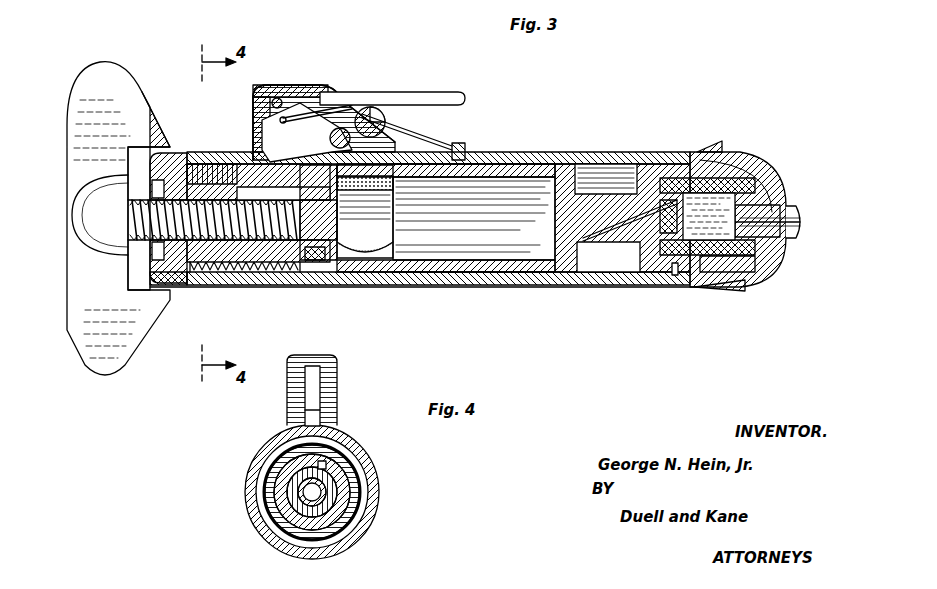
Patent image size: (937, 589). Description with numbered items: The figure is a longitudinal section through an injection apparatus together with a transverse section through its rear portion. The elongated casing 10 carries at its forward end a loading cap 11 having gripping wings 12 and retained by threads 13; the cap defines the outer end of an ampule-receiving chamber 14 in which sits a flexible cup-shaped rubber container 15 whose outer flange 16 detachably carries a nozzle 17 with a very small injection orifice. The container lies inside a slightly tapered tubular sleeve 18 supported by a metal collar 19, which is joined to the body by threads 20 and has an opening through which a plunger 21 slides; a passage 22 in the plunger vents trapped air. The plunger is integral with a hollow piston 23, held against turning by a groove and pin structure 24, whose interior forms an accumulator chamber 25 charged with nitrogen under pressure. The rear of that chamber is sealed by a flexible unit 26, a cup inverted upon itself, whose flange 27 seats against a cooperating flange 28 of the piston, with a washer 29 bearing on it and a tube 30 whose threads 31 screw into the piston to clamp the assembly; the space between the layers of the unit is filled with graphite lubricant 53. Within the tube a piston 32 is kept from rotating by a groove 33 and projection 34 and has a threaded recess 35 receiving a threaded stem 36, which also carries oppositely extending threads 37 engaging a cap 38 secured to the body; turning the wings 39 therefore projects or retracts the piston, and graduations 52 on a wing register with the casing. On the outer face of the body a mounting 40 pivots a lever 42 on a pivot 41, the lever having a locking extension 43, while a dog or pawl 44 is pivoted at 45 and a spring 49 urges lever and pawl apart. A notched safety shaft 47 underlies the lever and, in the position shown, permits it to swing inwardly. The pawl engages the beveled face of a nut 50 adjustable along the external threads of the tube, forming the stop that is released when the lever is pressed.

In FIG. 3, the casing 10 is at (525, 285).
In FIG. 4, the casing 10 is at (365, 460).
In FIG. 3, the loading cap 11 is at (780, 175).
In FIG. 3, the gripping extensions or wings 12 is at (712, 147).
In FIG. 3, the threads 13 is at (742, 165).
In FIG. 3, the ampule-receiving chamber 14 is at (732, 283).
In FIG. 3, the flexible cup-shaped container 15 is at (703, 285).
In FIG. 3, the outer flange portion 16 is at (770, 255).
In FIG. 3, the nozzle 17 is at (800, 222).
In FIG. 3, the tubular sleeve 18 is at (675, 190).
In FIG. 3, the collar 19 is at (670, 285).
In FIG. 3, the threads 20 is at (638, 160).
In FIG. 3, the plunger 21 is at (628, 245).
In FIG. 3, the passage 22 is at (598, 245).
In FIG. 3, the piston 23 is at (448, 270).
In FIG. 3, the groove and pin structure 24 is at (468, 152).
In FIG. 3, the chamber 25 is at (474, 218).
In FIG. 3, the flexible unit 26 is at (372, 258).
In FIG. 3, the flange 27 is at (318, 262).
In FIG. 3, the cooperating flange 28 is at (330, 262).
In FIG. 3, the washer 29 is at (296, 262).
In FIG. 3, the tube 30 is at (222, 170).
In FIG. 4, the tube 30 is at (350, 492).
In FIG. 3, the threads 31 is at (292, 276).
In FIG. 3, the piston 32 is at (212, 266).
In FIG. 4, the piston 32 is at (298, 494).
In FIG. 3, the groove 33 is at (208, 180).
In FIG. 3, the projection 34 is at (158, 185).
In FIG. 4, the projection 34 is at (323, 465).
In FIG. 3, the threaded recess 35 is at (272, 262).
In FIG. 3, the threaded stem 36 is at (237, 242).
In FIG. 4, the threaded stem 36 is at (308, 500).
In FIG. 3, the oppositely extending threads 37 is at (125, 262).
In FIG. 3, the cap 38 is at (128, 290).
In FIG. 3, the wings 39 is at (118, 218).
In FIG. 4, the mounting 40 is at (325, 390).
In FIG. 3, the pivot 41 is at (279, 97).
In FIG. 3, the lever 42 is at (425, 92).
In FIG. 3, the extension 43 is at (262, 122).
In FIG. 4, the extension 43 is at (320, 410).
In FIG. 3, the dog or pawl 44 is at (307, 132).
In FIG. 3, the pivot 45 is at (384, 125).
In FIG. 3, the shaft 47 is at (405, 125).
In FIG. 3, the spring 49 is at (312, 105).
In FIG. 3, the nut 50 is at (268, 272).
In FIG. 4, the nut 50 is at (368, 478).
In FIG. 3, the graduations 52 is at (153, 120).
In FIG. 3, the lubricant 53 is at (395, 243).